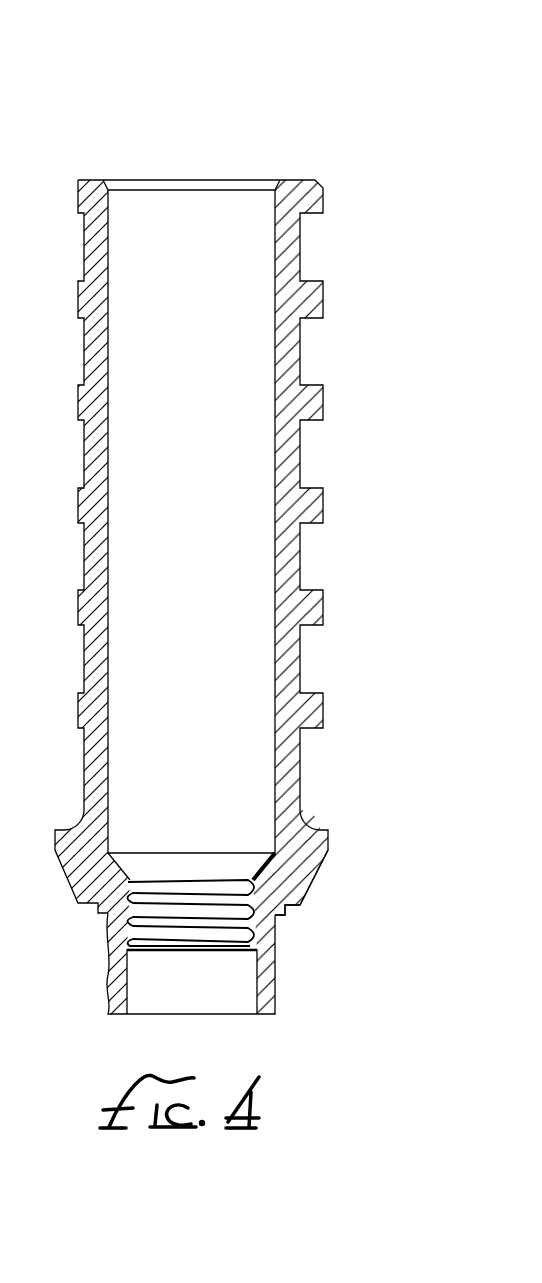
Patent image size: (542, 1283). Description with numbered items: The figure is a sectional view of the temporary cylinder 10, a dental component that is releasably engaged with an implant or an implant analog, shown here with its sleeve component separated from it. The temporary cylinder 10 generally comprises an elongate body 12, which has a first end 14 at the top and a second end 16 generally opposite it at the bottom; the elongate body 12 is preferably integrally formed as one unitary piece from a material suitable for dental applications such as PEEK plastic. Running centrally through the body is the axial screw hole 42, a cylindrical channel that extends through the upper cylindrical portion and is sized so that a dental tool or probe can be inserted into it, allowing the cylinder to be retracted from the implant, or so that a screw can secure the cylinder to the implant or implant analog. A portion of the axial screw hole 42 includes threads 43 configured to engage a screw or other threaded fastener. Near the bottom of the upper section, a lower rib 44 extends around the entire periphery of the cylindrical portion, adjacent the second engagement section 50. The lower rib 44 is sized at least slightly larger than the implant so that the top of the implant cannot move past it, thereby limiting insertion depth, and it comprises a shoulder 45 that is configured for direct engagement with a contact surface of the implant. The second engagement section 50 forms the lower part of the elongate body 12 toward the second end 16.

The temporary cylinder 10 is at (384, 82).
The elongate body 12 is at (380, 592).
The first end 14 is at (271, 140).
The second end 16 is at (330, 1055).
The axial screw hole 42 is at (192, 215).
The threads 43 is at (187, 920).
The lower rib 44 is at (322, 866).
The shoulder 45 is at (306, 902).
The second engagement section 50 is at (64, 974).